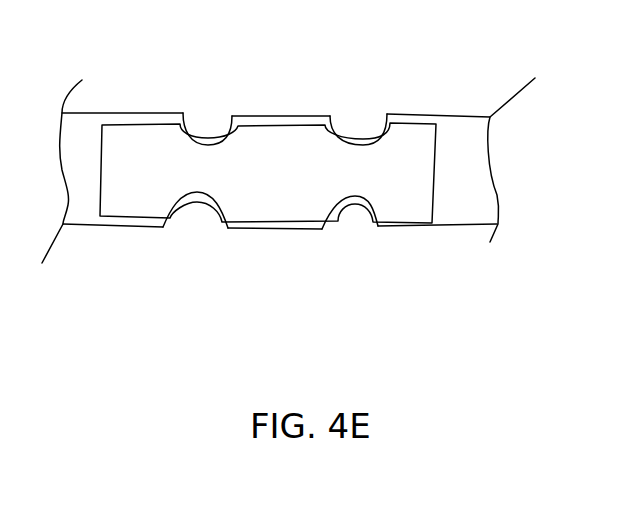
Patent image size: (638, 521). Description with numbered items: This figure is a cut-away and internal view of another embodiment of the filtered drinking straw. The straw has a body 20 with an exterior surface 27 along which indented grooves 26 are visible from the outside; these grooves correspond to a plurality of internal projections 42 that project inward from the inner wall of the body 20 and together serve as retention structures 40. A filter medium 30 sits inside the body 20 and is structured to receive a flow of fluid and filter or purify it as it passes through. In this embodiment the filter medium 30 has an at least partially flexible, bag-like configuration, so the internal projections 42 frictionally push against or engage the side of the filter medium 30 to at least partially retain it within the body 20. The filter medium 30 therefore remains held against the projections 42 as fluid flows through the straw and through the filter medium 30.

The body 20 is at (285, 231).
The indented grooves 26 is at (195, 90).
The exterior surface 27 is at (458, 115).
The filter medium 30 is at (306, 196).
The retention structure 40 is at (306, 196).
The internal projections 42 is at (199, 132).